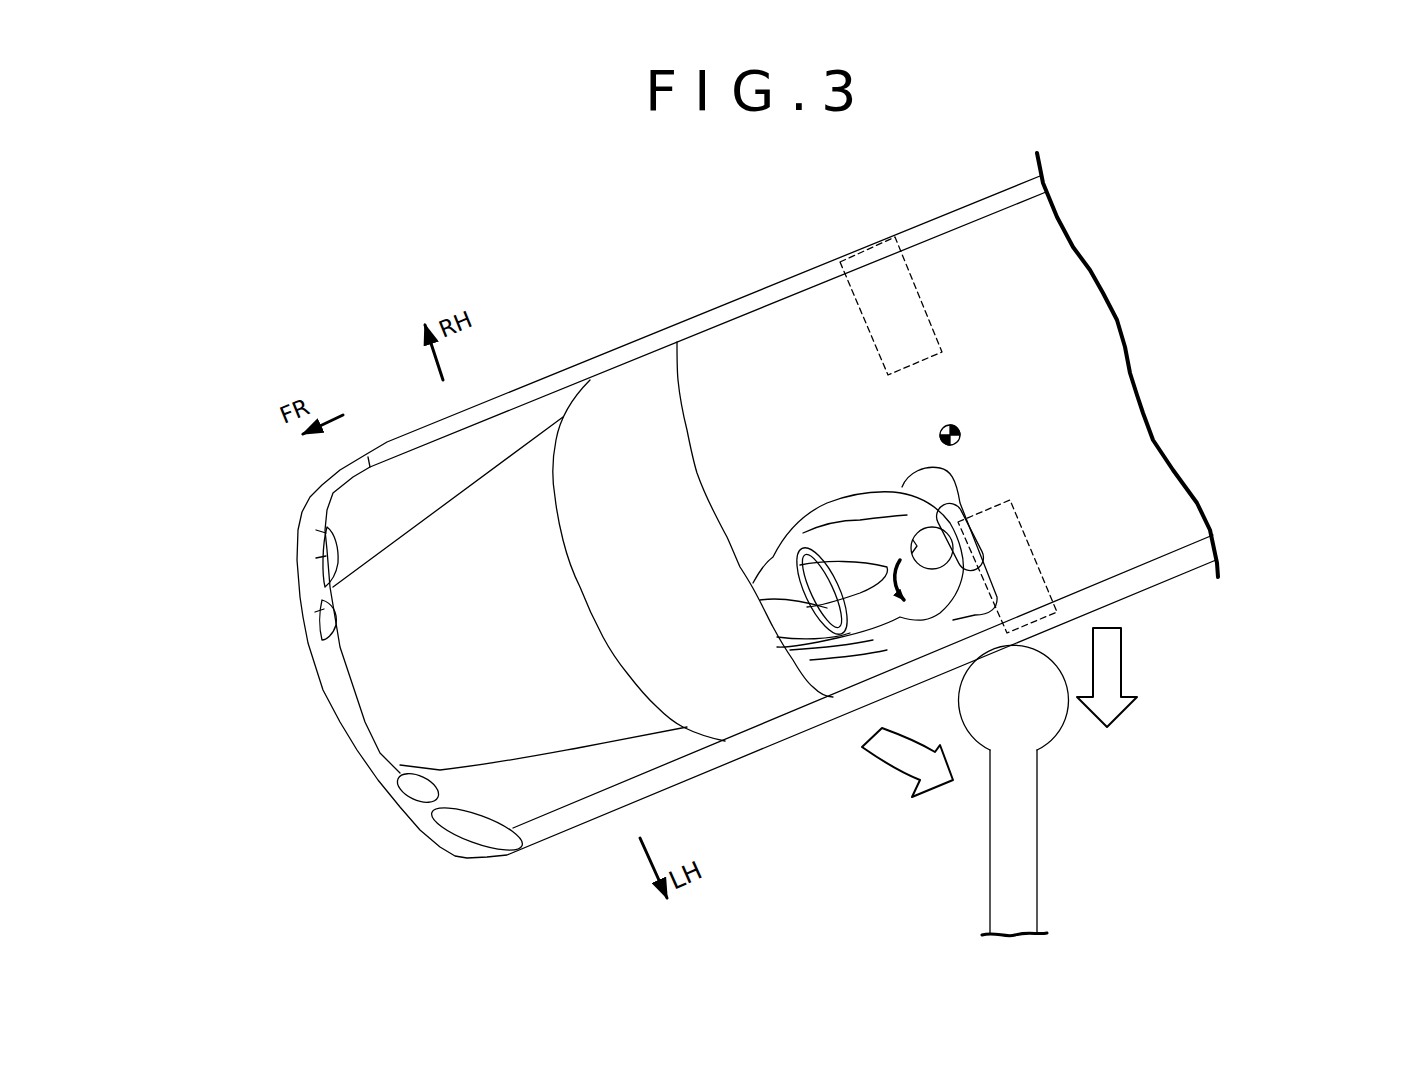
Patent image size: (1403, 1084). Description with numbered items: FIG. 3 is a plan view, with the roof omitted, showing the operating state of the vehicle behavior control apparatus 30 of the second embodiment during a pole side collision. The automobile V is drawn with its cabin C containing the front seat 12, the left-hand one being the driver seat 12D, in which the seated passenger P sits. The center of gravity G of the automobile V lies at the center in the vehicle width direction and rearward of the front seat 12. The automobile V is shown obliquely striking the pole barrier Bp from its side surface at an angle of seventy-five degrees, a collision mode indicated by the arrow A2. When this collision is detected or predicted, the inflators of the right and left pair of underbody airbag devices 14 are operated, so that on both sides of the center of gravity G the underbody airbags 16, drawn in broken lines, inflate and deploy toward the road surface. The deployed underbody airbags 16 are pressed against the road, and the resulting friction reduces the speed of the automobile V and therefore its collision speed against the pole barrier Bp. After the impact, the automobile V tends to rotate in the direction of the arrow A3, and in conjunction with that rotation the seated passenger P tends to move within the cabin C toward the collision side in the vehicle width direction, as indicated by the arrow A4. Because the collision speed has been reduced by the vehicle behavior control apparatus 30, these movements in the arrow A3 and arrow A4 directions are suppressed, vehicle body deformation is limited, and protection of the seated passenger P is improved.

The vehicle behavior control apparatus 30 is at (1066, 291).
The underbody airbag 16 is at (1069, 435).
The underbody airbag device 14 is at (957, 308).
The driver seat 12D is at (921, 463).
The front seat 12 is at (963, 496).
The automobile V is at (803, 266).
The cabin C is at (808, 418).
The seated passenger P is at (859, 494).
The center of gravity G is at (962, 435).
The arrow A2 is at (1120, 677).
The arrow A3 is at (907, 765).
The arrow A4 is at (887, 598).
The pole barrier Bp is at (1070, 718).